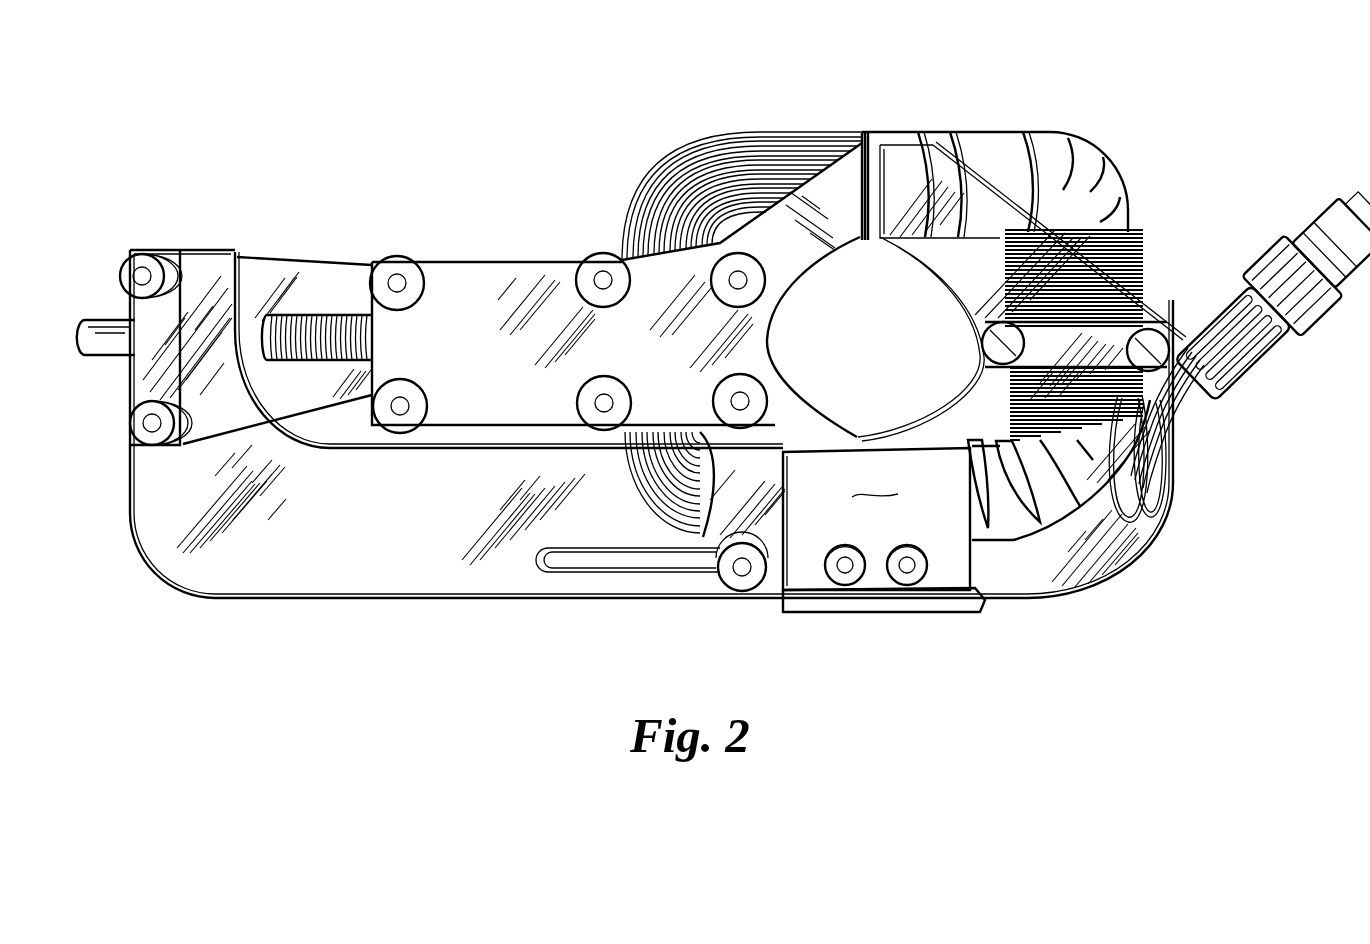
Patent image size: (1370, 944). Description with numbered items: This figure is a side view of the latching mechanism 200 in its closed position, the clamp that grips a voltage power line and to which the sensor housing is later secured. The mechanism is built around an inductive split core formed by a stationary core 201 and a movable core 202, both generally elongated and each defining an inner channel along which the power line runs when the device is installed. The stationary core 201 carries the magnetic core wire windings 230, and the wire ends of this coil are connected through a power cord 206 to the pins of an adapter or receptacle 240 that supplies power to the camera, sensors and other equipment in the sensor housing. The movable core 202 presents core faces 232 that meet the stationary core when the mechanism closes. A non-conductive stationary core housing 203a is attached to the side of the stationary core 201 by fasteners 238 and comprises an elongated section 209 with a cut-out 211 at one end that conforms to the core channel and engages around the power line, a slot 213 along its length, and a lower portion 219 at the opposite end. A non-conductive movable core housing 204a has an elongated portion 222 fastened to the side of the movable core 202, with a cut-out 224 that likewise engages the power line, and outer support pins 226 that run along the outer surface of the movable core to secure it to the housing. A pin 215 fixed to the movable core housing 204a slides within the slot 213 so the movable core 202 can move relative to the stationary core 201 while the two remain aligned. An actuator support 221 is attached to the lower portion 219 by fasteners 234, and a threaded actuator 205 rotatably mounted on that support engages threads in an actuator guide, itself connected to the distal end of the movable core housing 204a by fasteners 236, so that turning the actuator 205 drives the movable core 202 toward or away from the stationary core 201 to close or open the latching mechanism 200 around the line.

The latching mechanism 200 is at (1121, 663).
The stationary core 201 is at (1082, 150).
The movable core 202 is at (690, 190).
The stationary core housing 203a is at (1085, 557).
The movable core housing 204a is at (445, 296).
The actuator 205 is at (107, 350).
The power cord 206 is at (1190, 352).
The elongated section 209 is at (493, 578).
The cut-out 211 is at (767, 393).
The slot 213 is at (655, 552).
The pin 215 is at (740, 557).
The lower portion 219 is at (203, 312).
The actuator support 221 is at (317, 283).
The elongated portion 222 is at (660, 330).
The cut-out 224 is at (767, 342).
The outer support pins 226 is at (590, 282).
The magnetic core wire windings 230 is at (1140, 236).
The core faces 232 is at (895, 300).
The fasteners 234 is at (130, 266).
The fasteners 236 is at (372, 283).
The fasteners 238 is at (1152, 362).
The adapter or receptacle 240 is at (1333, 250).